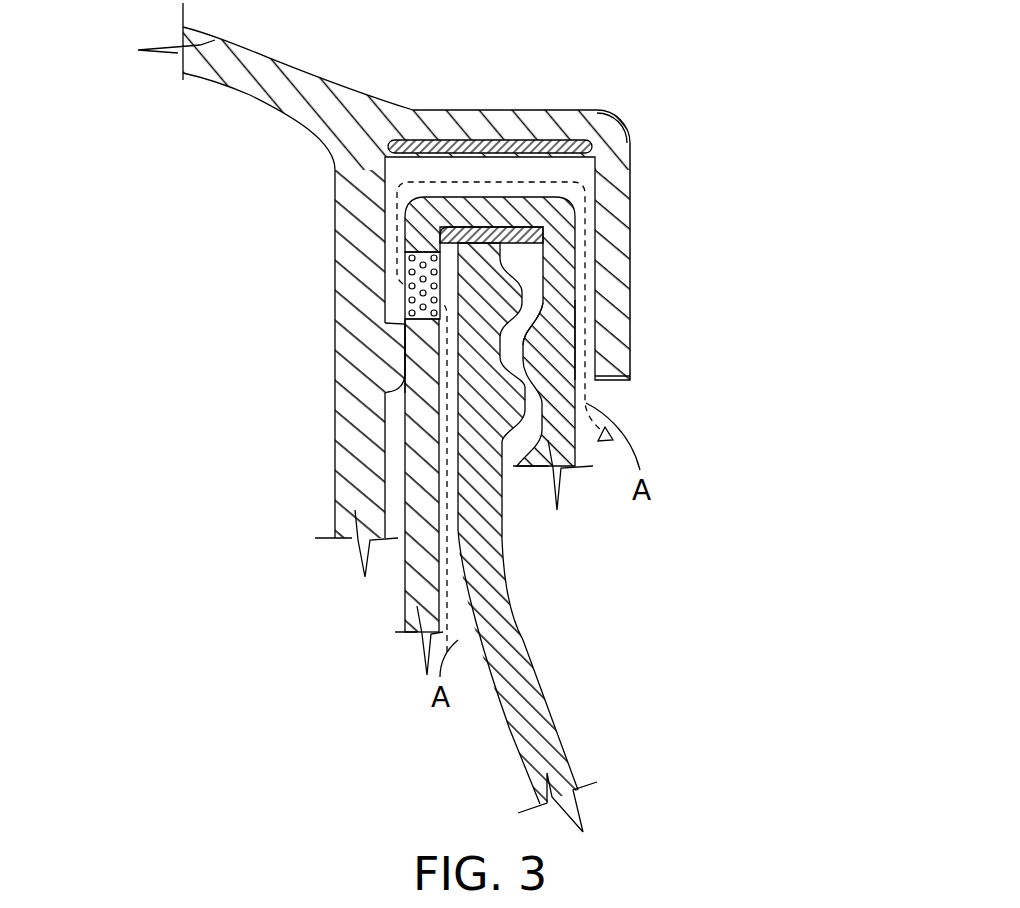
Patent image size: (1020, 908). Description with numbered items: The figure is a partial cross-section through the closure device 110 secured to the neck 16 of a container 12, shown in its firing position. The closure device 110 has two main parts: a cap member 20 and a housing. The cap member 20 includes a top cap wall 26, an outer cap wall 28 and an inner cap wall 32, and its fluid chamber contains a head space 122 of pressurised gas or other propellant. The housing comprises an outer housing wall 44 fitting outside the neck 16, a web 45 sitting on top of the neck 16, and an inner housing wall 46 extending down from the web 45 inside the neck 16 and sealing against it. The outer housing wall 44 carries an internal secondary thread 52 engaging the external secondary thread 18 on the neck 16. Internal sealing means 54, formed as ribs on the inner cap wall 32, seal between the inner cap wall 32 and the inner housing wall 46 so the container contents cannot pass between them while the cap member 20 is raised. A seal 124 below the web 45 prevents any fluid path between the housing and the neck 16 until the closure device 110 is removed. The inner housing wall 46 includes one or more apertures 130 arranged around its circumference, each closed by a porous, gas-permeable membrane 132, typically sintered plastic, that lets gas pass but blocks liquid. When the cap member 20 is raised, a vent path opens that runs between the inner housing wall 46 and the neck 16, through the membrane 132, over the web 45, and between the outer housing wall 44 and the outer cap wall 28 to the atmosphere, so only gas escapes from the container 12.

The container 12 is at (556, 537).
The neck 16 is at (488, 542).
The external secondary thread 18 is at (513, 430).
The cap member 20 is at (435, 290).
The top cap wall 26 is at (490, 108).
The outer cap wall 28 is at (617, 290).
The inner cap wall 32 is at (348, 222).
The outer housing wall 44 is at (562, 337).
The web 45 is at (540, 197).
The inner housing wall 46 is at (420, 583).
The internal secondary thread 52 is at (523, 353).
The internal sealing means 54 is at (403, 347).
The closure device 110 is at (646, 36).
The head space 122 is at (553, 146).
The seal 124 is at (520, 233).
The aperture 130 is at (405, 352).
The membrane 132 is at (420, 305).